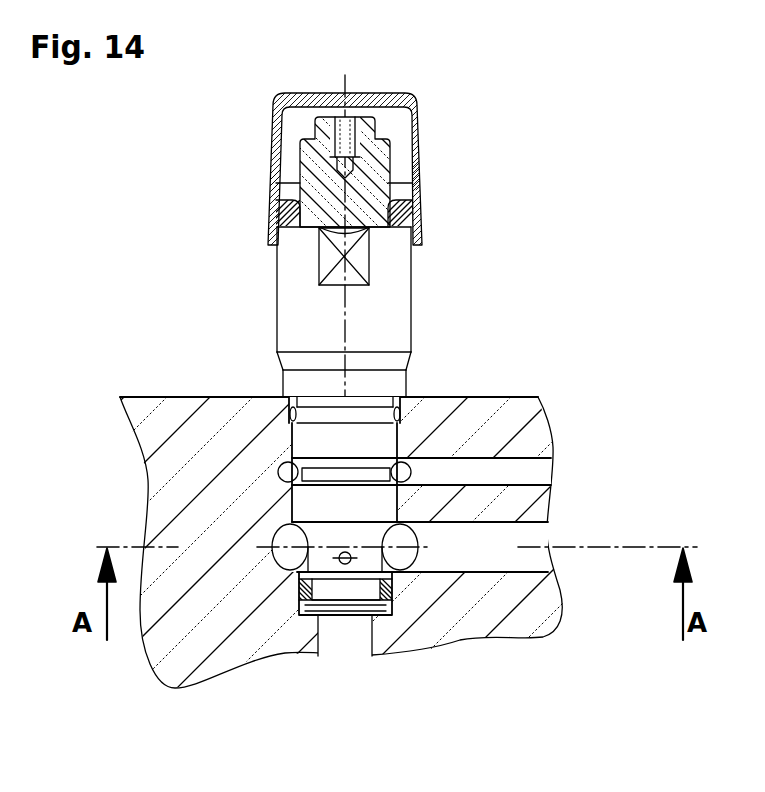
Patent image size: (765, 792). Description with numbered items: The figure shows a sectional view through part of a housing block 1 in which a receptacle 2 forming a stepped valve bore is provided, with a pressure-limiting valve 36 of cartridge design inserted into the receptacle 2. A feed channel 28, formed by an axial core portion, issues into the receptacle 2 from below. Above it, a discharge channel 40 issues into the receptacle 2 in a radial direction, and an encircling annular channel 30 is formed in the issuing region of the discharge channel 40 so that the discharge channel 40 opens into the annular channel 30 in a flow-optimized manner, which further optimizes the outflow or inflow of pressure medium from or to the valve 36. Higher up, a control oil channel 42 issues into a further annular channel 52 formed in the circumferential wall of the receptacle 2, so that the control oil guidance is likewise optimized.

The housing block 1 is at (160, 410).
The receptacle 2 is at (300, 506).
The feed channel 28 is at (357, 637).
The annular channel 30 is at (400, 558).
The pressure-limiting valve 36 is at (396, 288).
The discharge channel 40 is at (532, 560).
The control oil channel 42 is at (540, 470).
The further annular channel 52 is at (288, 468).